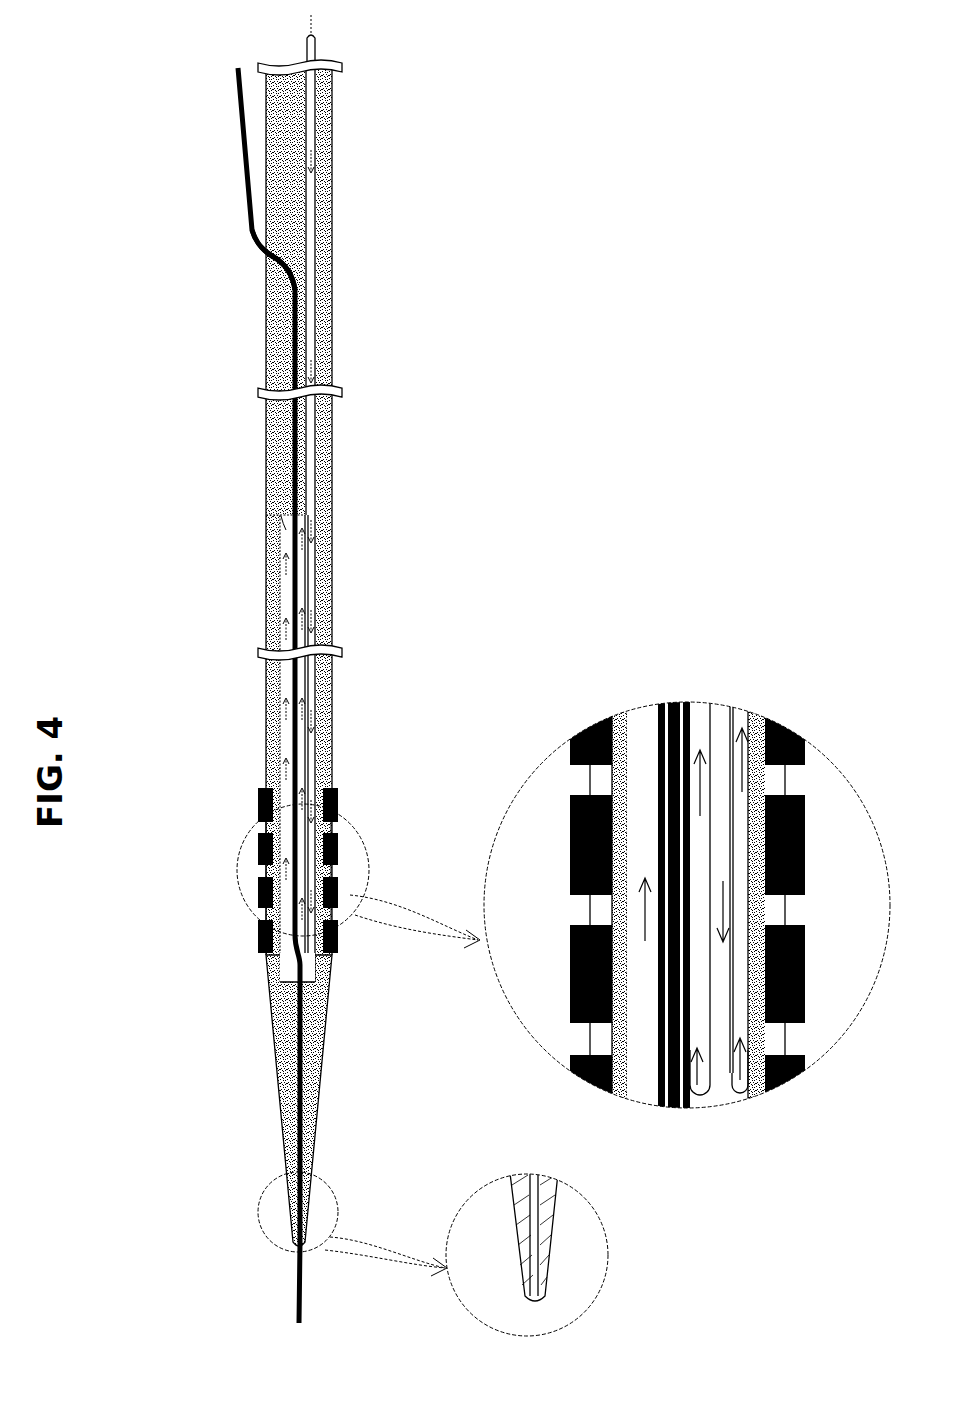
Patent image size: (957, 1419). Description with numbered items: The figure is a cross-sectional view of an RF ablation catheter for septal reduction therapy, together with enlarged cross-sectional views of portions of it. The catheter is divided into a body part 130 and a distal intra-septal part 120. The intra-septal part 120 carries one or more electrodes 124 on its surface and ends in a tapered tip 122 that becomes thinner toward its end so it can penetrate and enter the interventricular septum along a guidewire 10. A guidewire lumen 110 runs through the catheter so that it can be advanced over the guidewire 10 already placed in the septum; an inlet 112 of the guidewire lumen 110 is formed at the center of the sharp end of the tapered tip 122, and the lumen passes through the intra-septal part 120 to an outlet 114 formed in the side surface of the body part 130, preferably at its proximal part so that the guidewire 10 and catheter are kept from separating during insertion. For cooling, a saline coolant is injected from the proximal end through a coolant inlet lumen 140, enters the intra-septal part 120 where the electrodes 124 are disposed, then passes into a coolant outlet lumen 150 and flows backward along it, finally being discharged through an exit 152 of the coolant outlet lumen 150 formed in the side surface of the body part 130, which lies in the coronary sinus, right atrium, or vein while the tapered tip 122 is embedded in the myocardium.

The guidewire 10 is at (243, 145).
The guidewire lumen 110 is at (665, 705).
The inlet of the guidewire lumen 112 is at (536, 1300).
The outlet of the guidewire lumen 114 is at (265, 252).
The intra-septal part 120 is at (183, 870).
The tapered tip 122 is at (268, 1034).
The electrodes 124 is at (258, 805).
The body part 130 is at (266, 350).
The coolant inlet lumen 140 is at (316, 192).
The coolant outlet lumen 150 is at (640, 725).
The exit of the coolant outlet lumen 152 is at (266, 515).